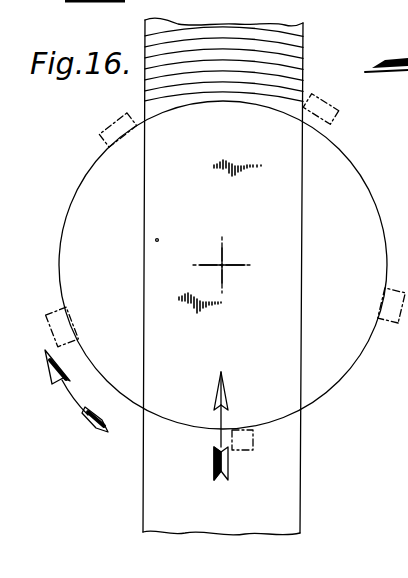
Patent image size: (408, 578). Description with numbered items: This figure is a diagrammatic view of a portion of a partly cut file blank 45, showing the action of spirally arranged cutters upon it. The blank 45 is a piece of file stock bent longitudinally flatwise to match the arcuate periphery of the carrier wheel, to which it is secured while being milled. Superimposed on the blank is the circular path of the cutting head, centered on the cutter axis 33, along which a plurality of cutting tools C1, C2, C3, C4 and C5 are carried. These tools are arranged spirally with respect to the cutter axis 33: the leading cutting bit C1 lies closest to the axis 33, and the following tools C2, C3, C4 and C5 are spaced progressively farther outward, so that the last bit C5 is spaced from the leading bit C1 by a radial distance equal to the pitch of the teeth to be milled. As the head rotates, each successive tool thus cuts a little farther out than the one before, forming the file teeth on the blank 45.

The cutter axis 33 is at (224, 264).
The file blank 45 is at (157, 219).
The leading cutting bit C1 is at (103, 140).
The cutting tool C2 is at (56, 314).
The cutting tool C3 is at (254, 440).
The cutting tool C4 is at (388, 321).
The cutting tool C5 is at (336, 110).